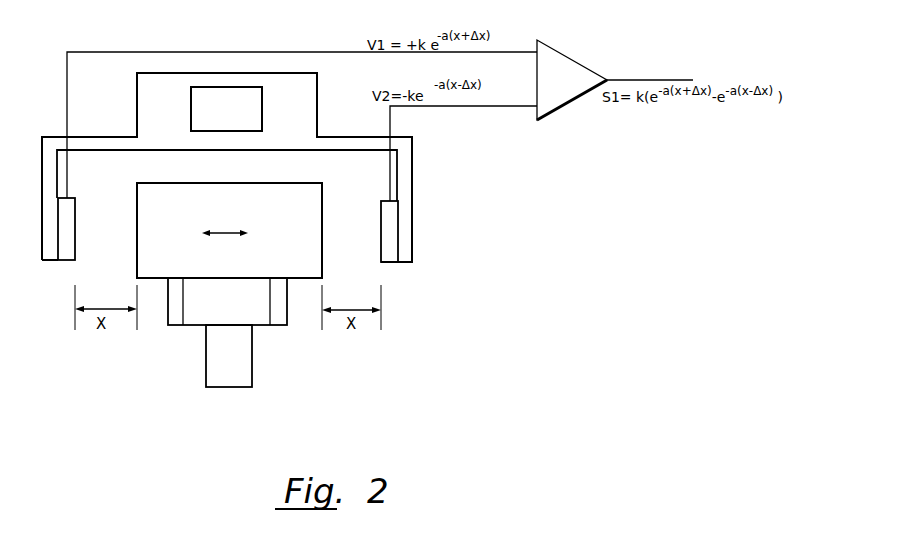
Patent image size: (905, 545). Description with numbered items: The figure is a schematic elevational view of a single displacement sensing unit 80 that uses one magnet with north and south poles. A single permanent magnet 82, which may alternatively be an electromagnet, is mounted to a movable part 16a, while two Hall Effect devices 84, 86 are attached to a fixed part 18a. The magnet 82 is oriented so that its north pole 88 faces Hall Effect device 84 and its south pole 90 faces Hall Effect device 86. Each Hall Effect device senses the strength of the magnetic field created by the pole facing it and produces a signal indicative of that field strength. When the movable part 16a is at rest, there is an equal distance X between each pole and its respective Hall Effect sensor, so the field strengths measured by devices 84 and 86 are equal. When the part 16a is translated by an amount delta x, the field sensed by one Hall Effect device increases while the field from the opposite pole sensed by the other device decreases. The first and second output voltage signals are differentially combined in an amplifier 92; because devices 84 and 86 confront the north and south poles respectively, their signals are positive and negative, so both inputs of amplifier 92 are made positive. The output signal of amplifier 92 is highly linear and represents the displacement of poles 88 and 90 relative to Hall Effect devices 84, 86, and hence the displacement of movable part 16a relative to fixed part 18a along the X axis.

The movable part 16a is at (206, 350).
The fixed part 18a is at (418, 193).
The sensing unit 80 is at (222, 219).
The permanent magnet 82 is at (293, 185).
The Hall Effect device 84 is at (65, 262).
The Hall Effect device 86 is at (381, 216).
The north pole 88 is at (137, 206).
The south pole 90 is at (322, 245).
The amplifier 92 is at (571, 58).